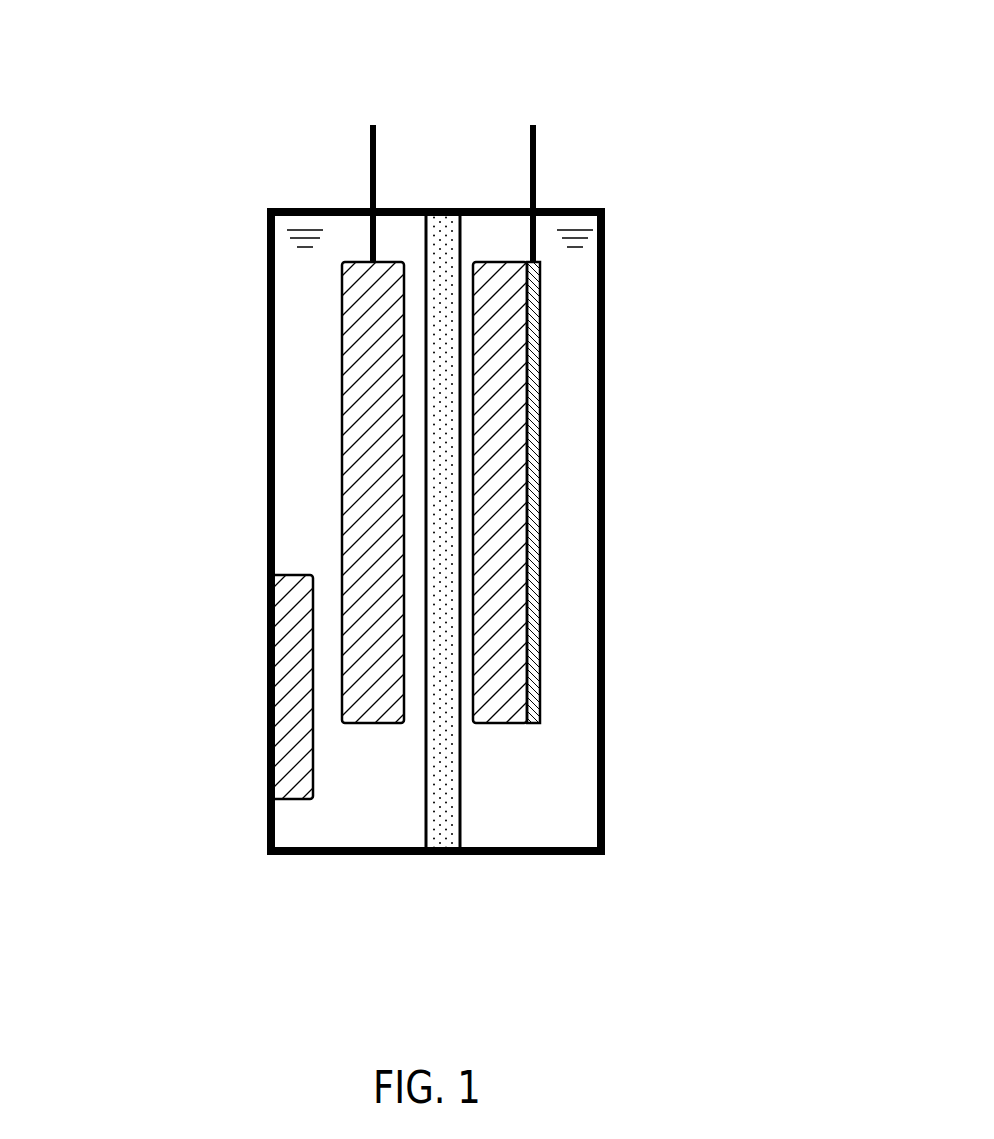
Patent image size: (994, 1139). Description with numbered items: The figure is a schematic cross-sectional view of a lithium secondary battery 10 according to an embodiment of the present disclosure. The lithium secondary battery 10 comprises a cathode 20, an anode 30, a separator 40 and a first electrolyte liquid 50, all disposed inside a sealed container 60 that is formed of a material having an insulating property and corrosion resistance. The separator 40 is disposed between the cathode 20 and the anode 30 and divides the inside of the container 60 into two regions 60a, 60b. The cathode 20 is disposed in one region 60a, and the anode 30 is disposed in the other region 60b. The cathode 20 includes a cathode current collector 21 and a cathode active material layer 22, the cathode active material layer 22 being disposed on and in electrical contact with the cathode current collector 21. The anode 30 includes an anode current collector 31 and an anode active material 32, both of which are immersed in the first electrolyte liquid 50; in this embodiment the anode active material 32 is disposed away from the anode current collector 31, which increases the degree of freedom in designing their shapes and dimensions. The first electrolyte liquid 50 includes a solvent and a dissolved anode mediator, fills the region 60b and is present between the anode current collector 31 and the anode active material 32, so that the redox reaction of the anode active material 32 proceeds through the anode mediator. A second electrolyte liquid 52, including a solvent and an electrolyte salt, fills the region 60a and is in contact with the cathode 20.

The lithium secondary battery 10 is at (603, 126).
The cathode 20 is at (725, 353).
The cathode current collector 21 is at (535, 444).
The cathode active material layer 22 is at (485, 363).
The anode 30 is at (140, 503).
The anode current collector 31 is at (367, 528).
The anode active material 32 is at (293, 625).
The separator 40 is at (440, 818).
The first electrolyte liquid 50 is at (355, 818).
The second electrolyte liquid 52 is at (527, 818).
The container 60 is at (267, 322).
The region 60a is at (568, 560).
The region 60b is at (293, 402).